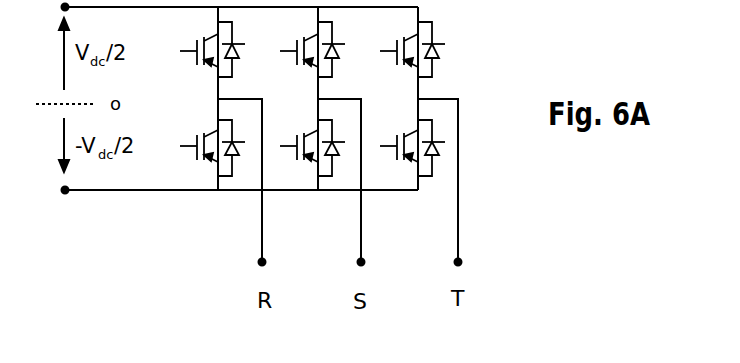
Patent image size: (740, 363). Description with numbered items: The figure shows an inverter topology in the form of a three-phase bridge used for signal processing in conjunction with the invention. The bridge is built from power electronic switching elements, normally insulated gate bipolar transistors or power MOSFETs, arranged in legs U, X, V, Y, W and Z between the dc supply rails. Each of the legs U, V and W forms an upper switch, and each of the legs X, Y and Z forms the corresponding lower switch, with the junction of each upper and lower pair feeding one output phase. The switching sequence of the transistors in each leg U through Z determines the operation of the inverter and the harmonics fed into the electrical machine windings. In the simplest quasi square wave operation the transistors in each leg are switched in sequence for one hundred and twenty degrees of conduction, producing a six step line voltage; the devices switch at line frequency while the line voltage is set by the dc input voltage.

The leg U is at (207, 45).
The leg X is at (207, 139).
The leg V is at (308, 45).
The leg Y is at (308, 139).
The leg W is at (404, 45).
The leg Z is at (409, 139).